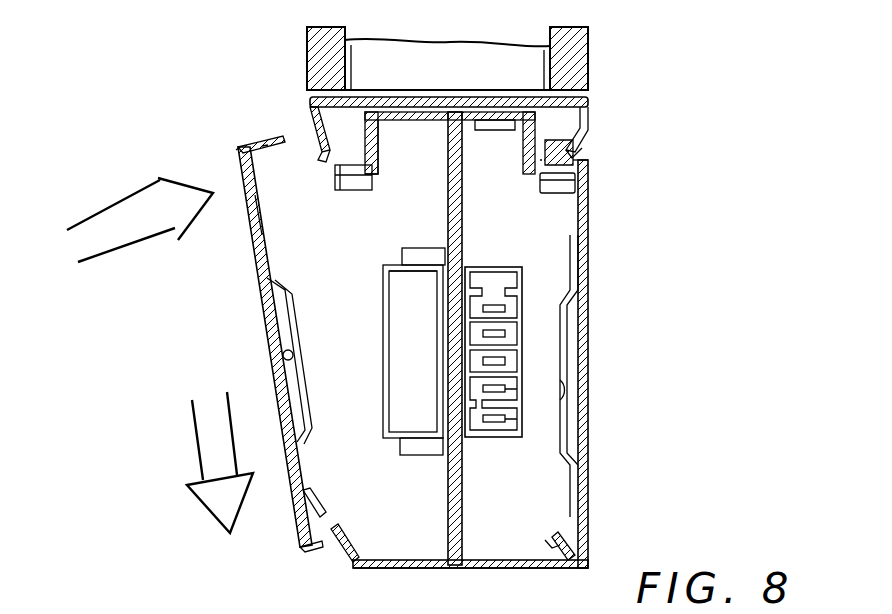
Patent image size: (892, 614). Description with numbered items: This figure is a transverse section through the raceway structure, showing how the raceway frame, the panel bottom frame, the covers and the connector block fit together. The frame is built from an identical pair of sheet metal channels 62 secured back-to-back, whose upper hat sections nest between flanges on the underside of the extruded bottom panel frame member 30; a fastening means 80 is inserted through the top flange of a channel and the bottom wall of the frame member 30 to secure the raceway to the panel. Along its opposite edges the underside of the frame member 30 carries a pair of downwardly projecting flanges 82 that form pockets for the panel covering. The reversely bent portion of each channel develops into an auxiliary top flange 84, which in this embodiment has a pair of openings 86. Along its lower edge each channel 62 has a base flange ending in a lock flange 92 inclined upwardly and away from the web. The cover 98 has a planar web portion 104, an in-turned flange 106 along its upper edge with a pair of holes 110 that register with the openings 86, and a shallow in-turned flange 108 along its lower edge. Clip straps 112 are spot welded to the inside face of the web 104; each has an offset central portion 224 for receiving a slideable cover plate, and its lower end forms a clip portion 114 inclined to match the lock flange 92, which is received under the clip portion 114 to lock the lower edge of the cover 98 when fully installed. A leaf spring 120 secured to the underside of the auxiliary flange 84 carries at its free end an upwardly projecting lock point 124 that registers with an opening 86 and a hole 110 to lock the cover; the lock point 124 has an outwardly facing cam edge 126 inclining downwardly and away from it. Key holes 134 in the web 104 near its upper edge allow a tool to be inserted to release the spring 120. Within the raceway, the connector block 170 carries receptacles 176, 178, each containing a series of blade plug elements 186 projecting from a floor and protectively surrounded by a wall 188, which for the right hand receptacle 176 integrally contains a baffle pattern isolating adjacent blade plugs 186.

The bottom panel frame member 30 is at (397, 88).
The cover 98 is at (592, 438).
The downwardly projecting flanges 82 is at (594, 108).
The lock point 124 is at (548, 148).
The auxiliary top flange 84 is at (594, 168).
The leaf spring 120 is at (560, 197).
The cam edge 126 is at (380, 128).
The fastening means 80 is at (491, 132).
The openings 86 is at (345, 190).
The web portion 104 is at (262, 305).
The in-turned flange 106 is at (290, 136).
The holes 110 is at (265, 138).
The key holes 134 is at (238, 170).
The clip straps 112 is at (266, 235).
The offset central portion 224 is at (298, 318).
The clip portion 114 is at (334, 512).
The in-turned flange 108 is at (320, 553).
The receptacle 178 is at (398, 325).
The wall 188 is at (386, 395).
The connector block 170 is at (500, 265).
The blade plug elements 186 is at (508, 412).
The receptacle 176 is at (563, 340).
The lock flange 92 is at (565, 547).
The sheet metal channels 62 is at (440, 568).